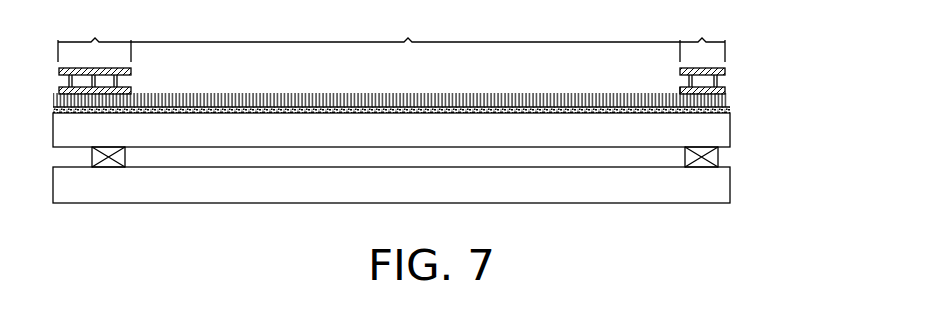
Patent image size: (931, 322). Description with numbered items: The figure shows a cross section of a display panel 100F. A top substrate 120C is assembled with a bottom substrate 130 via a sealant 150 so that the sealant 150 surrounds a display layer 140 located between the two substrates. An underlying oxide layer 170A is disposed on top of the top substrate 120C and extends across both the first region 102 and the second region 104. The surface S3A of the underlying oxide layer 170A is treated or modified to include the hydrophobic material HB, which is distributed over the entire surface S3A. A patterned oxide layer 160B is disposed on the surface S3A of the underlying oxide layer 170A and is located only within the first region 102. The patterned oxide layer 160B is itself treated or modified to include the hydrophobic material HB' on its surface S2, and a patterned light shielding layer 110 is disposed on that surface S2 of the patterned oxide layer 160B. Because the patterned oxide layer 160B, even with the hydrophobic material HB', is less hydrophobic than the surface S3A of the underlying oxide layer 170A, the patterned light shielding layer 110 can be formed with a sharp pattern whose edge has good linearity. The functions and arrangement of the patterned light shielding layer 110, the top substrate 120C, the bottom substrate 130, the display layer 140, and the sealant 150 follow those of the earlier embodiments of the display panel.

The display panel 100F is at (809, 270).
The first region 102 is at (391, 50).
The second region 104 is at (405, 24).
The patterned light shielding layer 110 is at (727, 68).
The hydrophobic material HB' is at (742, 57).
The patterned oxide layer 160B is at (726, 90).
The hydrophobic material HB is at (424, 93).
The surface S2 is at (681, 87).
The underlying oxide layer 170A is at (732, 111).
The surface S3A is at (565, 110).
The top substrate 120C is at (722, 130).
The sealant 150 is at (721, 158).
The display layer 140 is at (649, 160).
The bottom substrate 130 is at (722, 187).